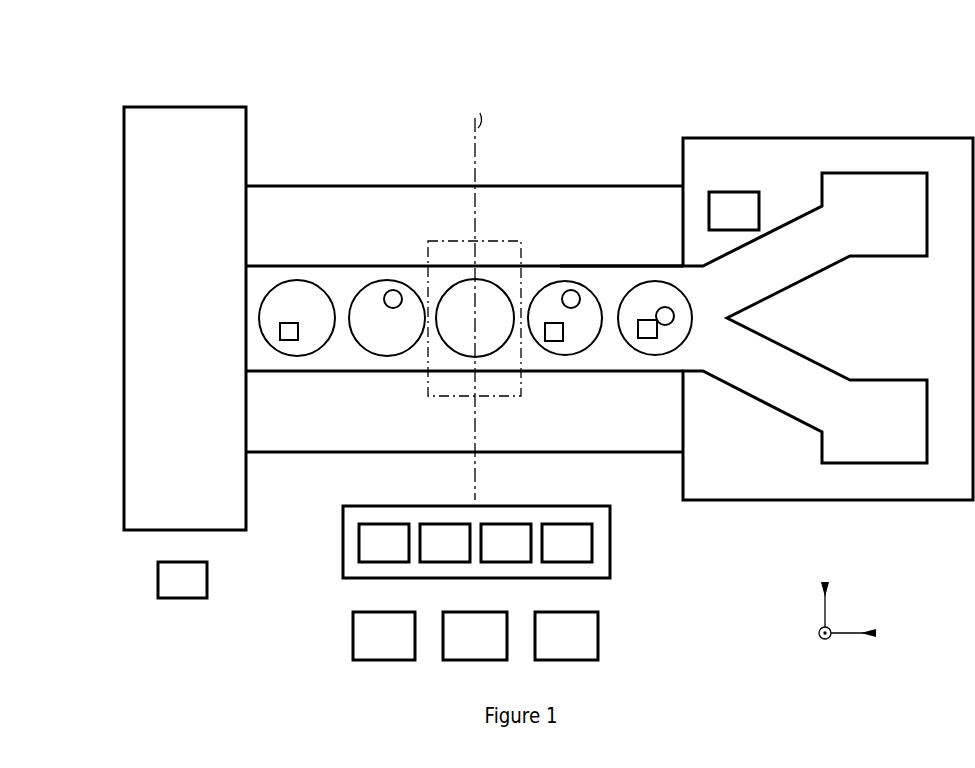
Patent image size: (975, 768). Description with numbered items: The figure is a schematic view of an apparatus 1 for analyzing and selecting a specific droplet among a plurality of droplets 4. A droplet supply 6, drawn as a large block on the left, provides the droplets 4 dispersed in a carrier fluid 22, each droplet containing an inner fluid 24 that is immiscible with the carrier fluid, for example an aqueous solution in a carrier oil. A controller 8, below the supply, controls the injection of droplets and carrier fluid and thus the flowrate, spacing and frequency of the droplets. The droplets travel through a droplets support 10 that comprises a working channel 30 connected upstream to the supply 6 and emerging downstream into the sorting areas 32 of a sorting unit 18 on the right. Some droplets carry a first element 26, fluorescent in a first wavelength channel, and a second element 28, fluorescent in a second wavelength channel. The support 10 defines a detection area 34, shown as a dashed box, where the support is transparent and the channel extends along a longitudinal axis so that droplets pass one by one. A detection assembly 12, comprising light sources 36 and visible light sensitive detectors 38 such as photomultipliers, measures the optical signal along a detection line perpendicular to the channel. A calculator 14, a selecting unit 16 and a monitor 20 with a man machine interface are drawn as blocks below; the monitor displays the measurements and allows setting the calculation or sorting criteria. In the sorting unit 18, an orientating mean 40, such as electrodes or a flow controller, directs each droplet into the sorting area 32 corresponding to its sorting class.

The apparatus 1 is at (116, 180).
The droplets 4 is at (285, 355).
The droplet supply 6 is at (202, 98).
The controller 8 is at (182, 580).
The droplets support 10 is at (541, 210).
The detection assembly 12 is at (615, 557).
The calculator 14 is at (384, 636).
The selecting unit 16 is at (475, 636).
The sorting unit 18 is at (857, 134).
The monitor 20 is at (566, 636).
The carrier fluid 22 is at (319, 303).
The inner fluid 24 is at (308, 325).
The first element 26 is at (284, 318).
The second element 28 is at (387, 292).
The working channel 30 is at (598, 262).
The sorting area 32 is at (870, 319).
The detection area 34 is at (488, 236).
The light source 36 is at (445, 543).
The visible light sensitive detector 38 is at (506, 543).
The orientating mean 40 is at (734, 211).